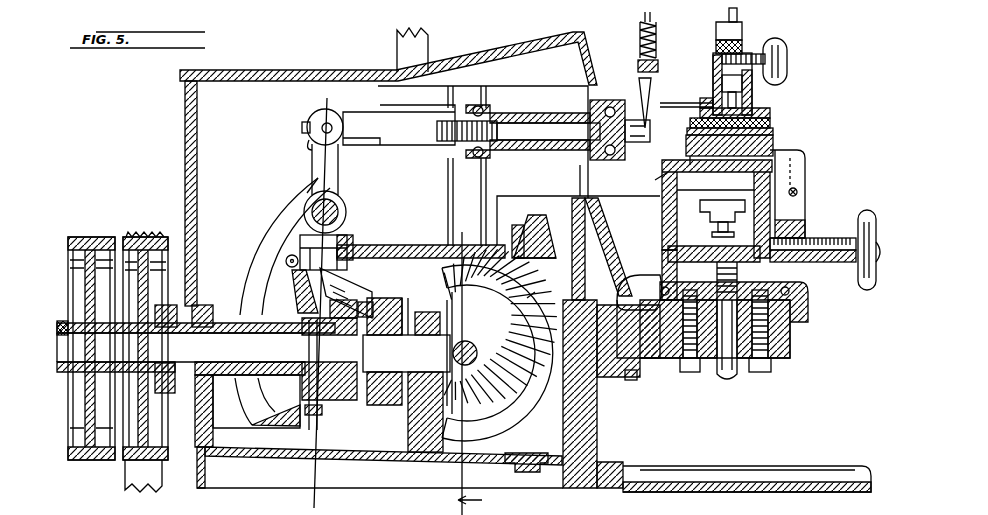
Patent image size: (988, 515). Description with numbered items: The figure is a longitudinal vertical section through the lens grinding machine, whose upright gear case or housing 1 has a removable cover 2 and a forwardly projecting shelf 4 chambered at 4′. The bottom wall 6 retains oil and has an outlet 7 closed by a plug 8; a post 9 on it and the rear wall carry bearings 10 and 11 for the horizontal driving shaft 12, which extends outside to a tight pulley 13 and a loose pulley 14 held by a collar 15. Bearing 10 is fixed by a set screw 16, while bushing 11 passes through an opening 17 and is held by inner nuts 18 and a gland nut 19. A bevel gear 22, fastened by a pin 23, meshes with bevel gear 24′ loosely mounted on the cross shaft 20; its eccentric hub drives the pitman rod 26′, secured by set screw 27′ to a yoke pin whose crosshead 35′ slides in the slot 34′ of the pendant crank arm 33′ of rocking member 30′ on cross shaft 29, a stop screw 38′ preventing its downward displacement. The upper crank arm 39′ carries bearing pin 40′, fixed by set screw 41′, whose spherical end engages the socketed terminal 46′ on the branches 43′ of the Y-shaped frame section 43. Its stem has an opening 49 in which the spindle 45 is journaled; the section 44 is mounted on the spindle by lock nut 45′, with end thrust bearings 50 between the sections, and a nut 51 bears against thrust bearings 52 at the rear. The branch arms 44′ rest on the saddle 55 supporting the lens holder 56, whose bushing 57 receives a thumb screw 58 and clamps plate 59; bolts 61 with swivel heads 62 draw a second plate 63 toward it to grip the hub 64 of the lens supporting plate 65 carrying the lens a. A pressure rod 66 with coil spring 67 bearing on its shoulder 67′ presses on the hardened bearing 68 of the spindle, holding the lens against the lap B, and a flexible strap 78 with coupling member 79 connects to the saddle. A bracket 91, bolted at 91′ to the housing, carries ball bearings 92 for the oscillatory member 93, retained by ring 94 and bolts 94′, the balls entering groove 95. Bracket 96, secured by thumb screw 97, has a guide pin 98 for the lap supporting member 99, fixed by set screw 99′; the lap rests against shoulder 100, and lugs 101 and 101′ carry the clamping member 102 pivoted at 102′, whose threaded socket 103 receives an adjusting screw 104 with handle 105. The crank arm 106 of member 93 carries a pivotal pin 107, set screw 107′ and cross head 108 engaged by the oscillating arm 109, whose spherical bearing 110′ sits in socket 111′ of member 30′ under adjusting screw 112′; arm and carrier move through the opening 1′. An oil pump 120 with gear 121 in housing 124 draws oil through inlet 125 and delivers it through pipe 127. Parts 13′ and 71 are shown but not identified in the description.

The gear case or housing 1 is at (185, 188).
The opening 1′ is at (580, 176).
The top or cover 2 is at (301, 70).
The shelf 4 is at (694, 484).
The chamber 4′ is at (727, 468).
The bottom wall 6 is at (370, 500).
The outlet 7 is at (534, 456).
The plug 8 is at (528, 474).
The post 9 is at (428, 448).
The inner shaft bearing 10 is at (452, 373).
The outer bushing 11 is at (246, 394).
The driving shaft 12 is at (668, 182).
The tight pulley 13 is at (142, 237).
The disc arm 13′ is at (163, 237).
The loose pulley 14 is at (90, 237).
The collar 15 is at (62, 372).
The set screw 16 is at (448, 324).
The opening 17 is at (190, 313).
The inner nuts 18 is at (210, 314).
The gland nut 19 is at (170, 394).
The cross shaft 20 is at (480, 354).
The bevel gear 22 is at (412, 412).
The pin 23 is at (363, 352).
The bevel gear 24′ is at (541, 288).
The pitman rod 26′ is at (373, 282).
The set screw 27′ is at (258, 246).
The cross shaft 29 is at (347, 212).
The rocking member 30′ is at (318, 178).
The crank arm 33′ is at (280, 230).
The slot 34′ is at (276, 424).
The crosshead 35′ is at (292, 291).
The stop screw 38′ is at (284, 266).
The crank arm 39′ is at (333, 173).
The bearing pin 40′ is at (312, 147).
The set screw 41′ is at (302, 128).
The frame section 43 is at (470, 152).
The branches 43′ is at (408, 120).
The frame section 44 is at (629, 106).
The branch arms 44′ is at (670, 103).
The pivotal bolt or spindle 45 is at (543, 123).
The lock nut 45′ is at (640, 144).
The socketed terminal 46′ is at (312, 110).
The lengthwise opening 49 is at (548, 151).
The end thrust bearings 50 is at (600, 160).
The nut 51 is at (455, 118).
The end thrust bearings 52 is at (483, 110).
The saddle member 55 is at (742, 38).
The lens holder 56 is at (700, 106).
The bushing 57 is at (787, 48).
The thumb screw 58 is at (787, 63).
The clamping plate 59 is at (752, 90).
The bolts 61 is at (722, 78).
The swivel heads 62 is at (722, 92).
The clamping plate 63 is at (713, 72).
The central hub 64 is at (752, 109).
The lens supporting plate 65 is at (770, 124).
The pressure rod 66 is at (651, 30).
The coil spring 67 is at (640, 46).
The shoulder 67′ is at (638, 68).
The hardened bearing 68 is at (690, 160).
The bar 71 is at (397, 49).
The flexible strap 78 is at (737, 15).
The coupling member 79 is at (722, 40).
The bracket 91 is at (663, 360).
The bolts 91′ is at (633, 380).
The anti-friction bearing 92 is at (660, 303).
The oscillatory member 93 is at (660, 286).
The retaining ring 94 is at (806, 289).
The bolts 94′ is at (690, 372).
The annular groove 95 is at (806, 312).
The bracket 96 is at (668, 228).
The thumb screw 97 is at (727, 380).
The guide pin 98 is at (674, 204).
The lap supporting member 99 is at (716, 212).
The set screw 99′ is at (716, 231).
The clamping shoulder 100 is at (649, 180).
The lug 101 is at (805, 196).
The lug 101′ is at (774, 232).
The clamping member 102 is at (805, 210).
The pivot 102′ is at (797, 190).
The threaded socket 103 is at (820, 262).
The adjusting screw 104 is at (829, 238).
The handle 105 is at (866, 290).
The crank arm 106 is at (662, 247).
The pivotal pin 107 is at (548, 226).
The set screw 107′ is at (518, 226).
The cross head 108 is at (528, 260).
The oscillating arm 109 is at (425, 246).
The spherical bearing 110′ is at (352, 250).
The socket 111′ is at (344, 290).
The adjusting screw 112′ is at (302, 248).
The oil pump 120 is at (308, 359).
The gear 121 is at (301, 375).
The pump housing 124 is at (322, 406).
The inlet 125 is at (308, 448).
The pipe 127 is at (357, 306).
The lens a is at (688, 132).
The lap B is at (776, 151).